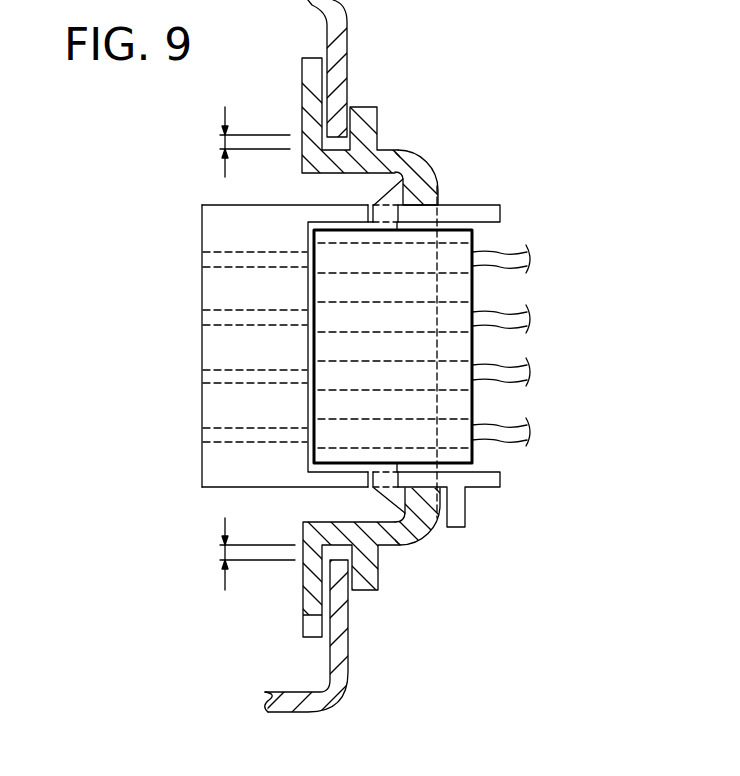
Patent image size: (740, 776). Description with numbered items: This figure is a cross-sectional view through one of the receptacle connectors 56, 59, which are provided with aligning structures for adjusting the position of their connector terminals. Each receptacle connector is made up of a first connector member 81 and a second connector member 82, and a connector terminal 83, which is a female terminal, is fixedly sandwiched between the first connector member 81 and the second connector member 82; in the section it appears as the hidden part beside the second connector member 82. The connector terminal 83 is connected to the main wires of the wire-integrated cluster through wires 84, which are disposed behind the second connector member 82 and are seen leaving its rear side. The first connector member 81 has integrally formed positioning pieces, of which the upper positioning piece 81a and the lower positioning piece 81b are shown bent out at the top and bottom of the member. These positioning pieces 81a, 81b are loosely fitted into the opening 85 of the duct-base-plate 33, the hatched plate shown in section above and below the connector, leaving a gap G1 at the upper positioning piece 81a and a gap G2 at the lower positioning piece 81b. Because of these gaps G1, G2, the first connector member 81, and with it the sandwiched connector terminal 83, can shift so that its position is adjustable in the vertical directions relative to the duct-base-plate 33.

The duct-base-plate 33 is at (337, 47).
The opening 85 is at (330, 128).
The upper positioning piece 81a is at (393, 156).
The lower positioning piece 81b is at (418, 529).
The first connector member 81 is at (275, 366).
The second connector member 82 is at (472, 402).
The connector terminal 83 is at (238, 252).
The wires 84 is at (507, 252).
The receptacle connector 56 is at (126, 346).
The receptacle connector 59 is at (213, 476).
The gap G1 is at (237, 142).
The gap G2 is at (240, 554).